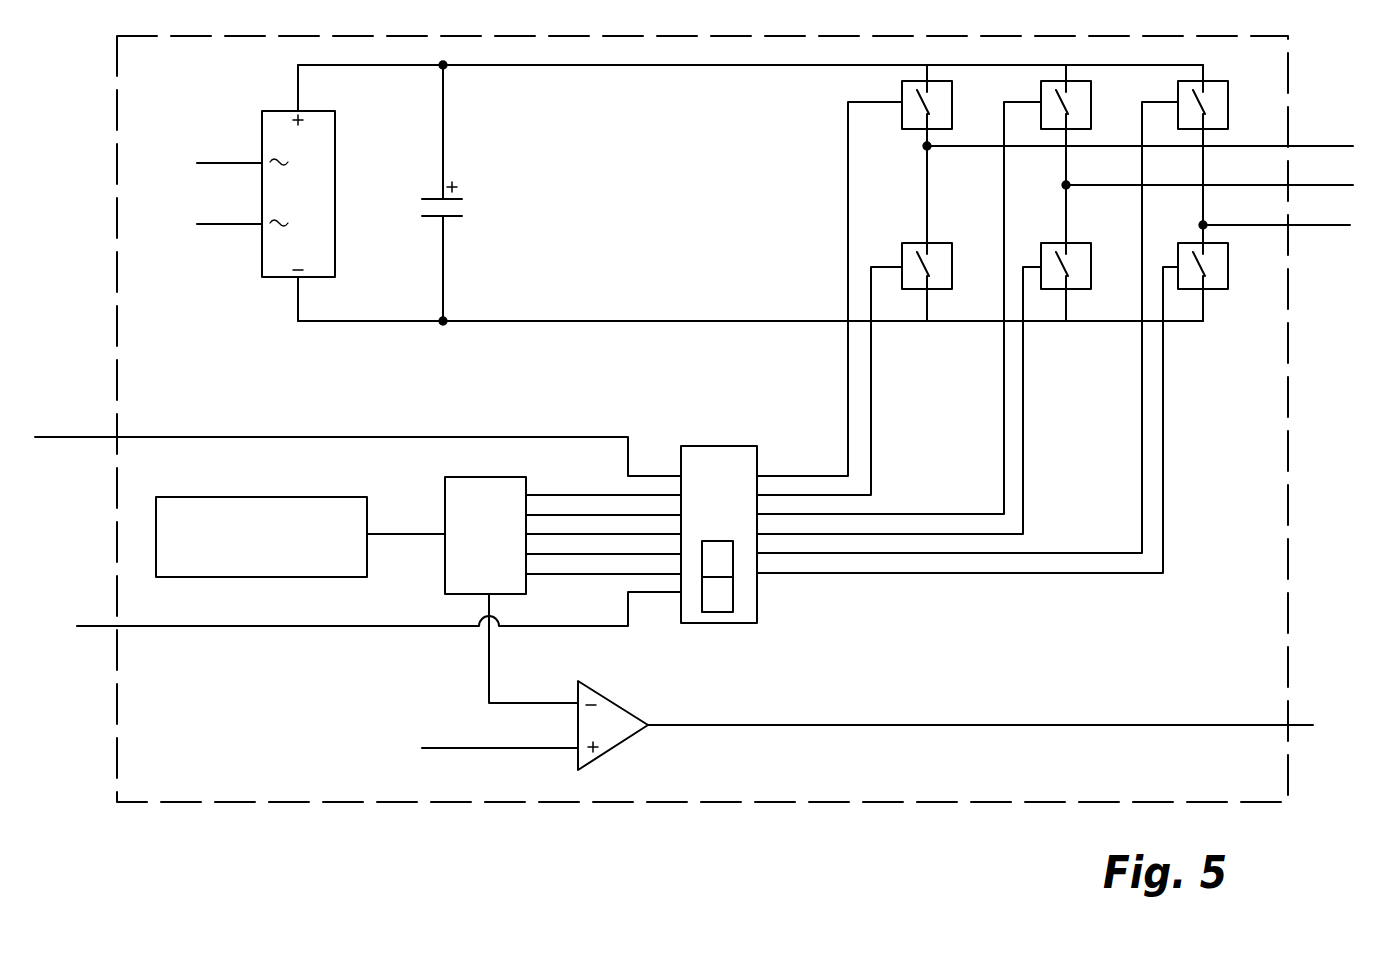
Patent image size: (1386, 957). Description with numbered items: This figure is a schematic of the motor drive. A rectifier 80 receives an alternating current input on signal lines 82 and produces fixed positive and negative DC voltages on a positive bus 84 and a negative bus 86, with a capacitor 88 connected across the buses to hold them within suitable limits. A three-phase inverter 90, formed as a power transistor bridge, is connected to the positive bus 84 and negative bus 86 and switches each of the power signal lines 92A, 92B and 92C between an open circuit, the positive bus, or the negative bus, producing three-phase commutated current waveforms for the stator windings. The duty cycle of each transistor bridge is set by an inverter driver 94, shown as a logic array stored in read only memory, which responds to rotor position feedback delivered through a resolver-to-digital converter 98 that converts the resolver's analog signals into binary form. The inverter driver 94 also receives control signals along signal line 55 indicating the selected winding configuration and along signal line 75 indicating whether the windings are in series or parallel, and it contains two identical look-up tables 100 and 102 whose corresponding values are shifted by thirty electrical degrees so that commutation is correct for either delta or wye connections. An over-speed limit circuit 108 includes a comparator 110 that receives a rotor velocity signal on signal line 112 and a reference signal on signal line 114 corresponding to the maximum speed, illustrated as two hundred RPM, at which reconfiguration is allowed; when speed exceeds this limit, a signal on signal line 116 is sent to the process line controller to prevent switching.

The signal line 55 is at (215, 437).
The signal line 75 is at (96, 626).
The rectifier 80 is at (335, 150).
The signal lines 82 is at (224, 224).
The positive bus 84 is at (562, 66).
The negative bus 86 is at (527, 321).
The capacitor 88 is at (477, 231).
The three-phase inverter 90 is at (1218, 58).
The power signal line 92A is at (1308, 146).
The power signal line 92B is at (1302, 185).
The power signal line 92C is at (1308, 225).
The inverter driver 94 is at (712, 446).
The resolver-to-digital converter 98 is at (482, 477).
The look-up table 100 is at (717, 558).
The look-up table 102 is at (717, 604).
The over-speed limit circuit 108 is at (952, 658).
The comparator 110 is at (605, 697).
The signal line 112 is at (530, 703).
The signal line 114 is at (508, 748).
The signal line 116 is at (1148, 722).